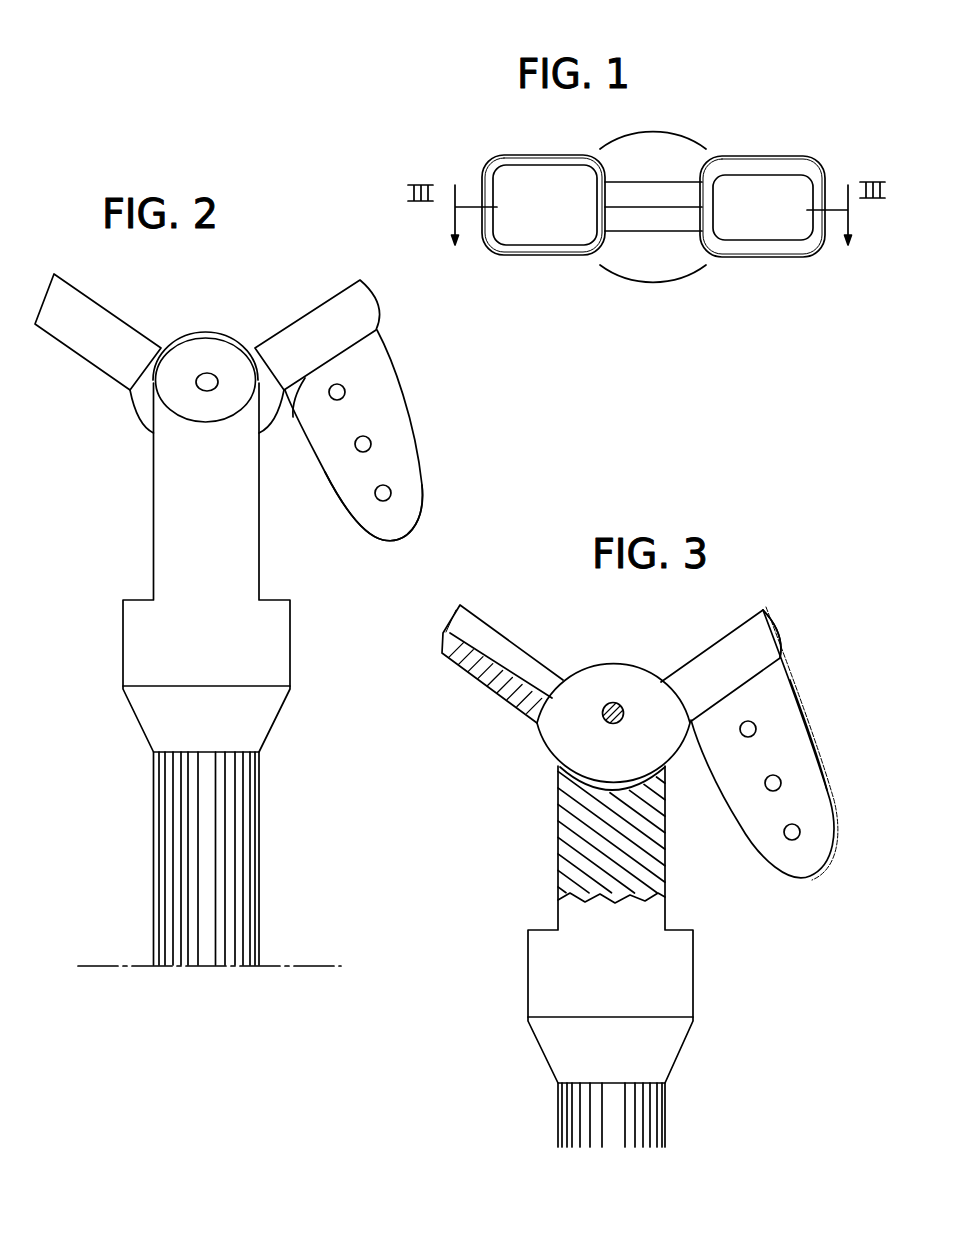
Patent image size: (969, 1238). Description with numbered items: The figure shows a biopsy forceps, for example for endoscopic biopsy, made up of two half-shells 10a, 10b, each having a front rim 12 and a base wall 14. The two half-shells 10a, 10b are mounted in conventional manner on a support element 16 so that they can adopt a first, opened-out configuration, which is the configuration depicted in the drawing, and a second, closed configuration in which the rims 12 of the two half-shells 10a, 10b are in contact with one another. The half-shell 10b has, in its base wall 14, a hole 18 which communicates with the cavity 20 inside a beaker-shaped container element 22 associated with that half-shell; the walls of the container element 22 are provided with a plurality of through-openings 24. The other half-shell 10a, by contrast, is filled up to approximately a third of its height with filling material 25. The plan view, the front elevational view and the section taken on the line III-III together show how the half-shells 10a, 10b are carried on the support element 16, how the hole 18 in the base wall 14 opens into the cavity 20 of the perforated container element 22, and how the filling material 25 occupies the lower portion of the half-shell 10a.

In FIG. 1, the half-shell 10a is at (488, 158).
In FIG. 2, the half-shell 10a is at (34, 329).
In FIG. 3, the half-shell 10a is at (495, 701).
In FIG. 1, the half-shell 10b is at (811, 158).
In FIG. 2, the half-shell 10b is at (267, 336).
In FIG. 3, the half-shell 10b is at (696, 648).
In FIG. 1, the front rim 12 is at (548, 256).
In FIG. 2, the front rim 12 is at (93, 298).
In FIG. 3, the front rim 12 is at (748, 618).
In FIG. 2, the base wall 14 is at (105, 378).
In FIG. 3, the base wall 14 is at (784, 659).
In FIG. 1, the support element 16 is at (652, 180).
In FIG. 2, the support element 16 is at (150, 399).
In FIG. 3, the support element 16 is at (551, 752).
In FIG. 1, the hole 18 is at (545, 165).
In FIG. 2, the hole 18 is at (368, 338).
In FIG. 3, the hole 18 is at (741, 684).
In FIG. 2, the cavity 20 is at (408, 492).
In FIG. 3, the cavity 20 is at (812, 818).
In FIG. 2, the beaker-shaped container element 22 is at (361, 538).
In FIG. 3, the beaker-shaped container element 22 is at (808, 715).
In FIG. 2, the through-openings 24 is at (385, 487).
In FIG. 3, the through-openings 24 is at (756, 730).
In FIG. 3, the filling material 25 is at (478, 657).